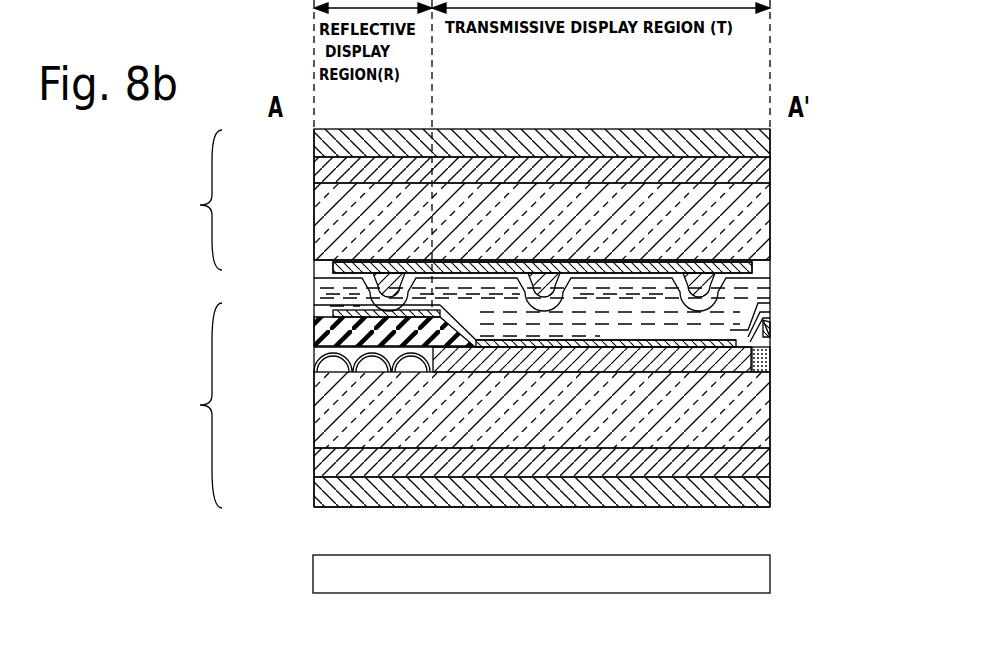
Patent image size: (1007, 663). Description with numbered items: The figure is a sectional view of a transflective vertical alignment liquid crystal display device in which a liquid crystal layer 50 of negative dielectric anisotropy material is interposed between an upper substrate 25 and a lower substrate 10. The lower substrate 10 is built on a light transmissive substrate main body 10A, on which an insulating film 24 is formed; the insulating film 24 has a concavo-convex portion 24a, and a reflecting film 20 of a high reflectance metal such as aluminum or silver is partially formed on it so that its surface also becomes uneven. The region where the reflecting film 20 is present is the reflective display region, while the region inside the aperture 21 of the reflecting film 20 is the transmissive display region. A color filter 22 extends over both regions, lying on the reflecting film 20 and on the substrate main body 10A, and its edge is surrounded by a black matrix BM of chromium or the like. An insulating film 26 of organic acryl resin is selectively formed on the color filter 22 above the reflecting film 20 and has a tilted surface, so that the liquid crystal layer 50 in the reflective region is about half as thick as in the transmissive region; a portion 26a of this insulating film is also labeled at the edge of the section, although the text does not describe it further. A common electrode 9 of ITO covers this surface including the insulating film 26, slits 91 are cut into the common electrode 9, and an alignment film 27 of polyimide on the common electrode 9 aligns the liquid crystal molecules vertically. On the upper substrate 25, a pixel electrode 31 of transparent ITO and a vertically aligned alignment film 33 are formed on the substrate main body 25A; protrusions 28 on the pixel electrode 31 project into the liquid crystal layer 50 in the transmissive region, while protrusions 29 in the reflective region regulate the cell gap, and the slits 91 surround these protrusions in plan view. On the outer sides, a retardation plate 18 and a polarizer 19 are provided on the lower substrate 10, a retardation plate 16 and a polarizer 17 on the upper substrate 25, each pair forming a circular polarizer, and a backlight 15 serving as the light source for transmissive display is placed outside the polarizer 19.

The polarizer 17 is at (770, 143).
The retardation plate 16 is at (770, 167).
The substrate main body 25A is at (770, 200).
The upper substrate 25 is at (192, 200).
The alignment film 33 is at (770, 240).
The pixel electrode 31 is at (770, 270).
The protrusions 28 is at (700, 270).
The liquid crystal layer 50 is at (770, 285).
The slits 91 is at (615, 338).
The insulating film 26 is at (320, 326).
The alignment film 27 is at (770, 303).
The common electrode 9 is at (770, 313).
The electrode connection portion 26a is at (770, 328).
The reflecting film 20 is at (316, 352).
The black matrix BM is at (314, 350).
The color filter 22 is at (772, 407).
The concavo-convex portion 24a is at (350, 373).
The insulating film 24 is at (373, 373).
The aperture 21 is at (438, 373).
The substrate main body 10A is at (772, 458).
The retardation plate 18 is at (772, 488).
The polarizer 19 is at (772, 503).
The lower substrate 10 is at (192, 405).
The protrusions 29 is at (333, 272).
The backlight 15 is at (757, 570).